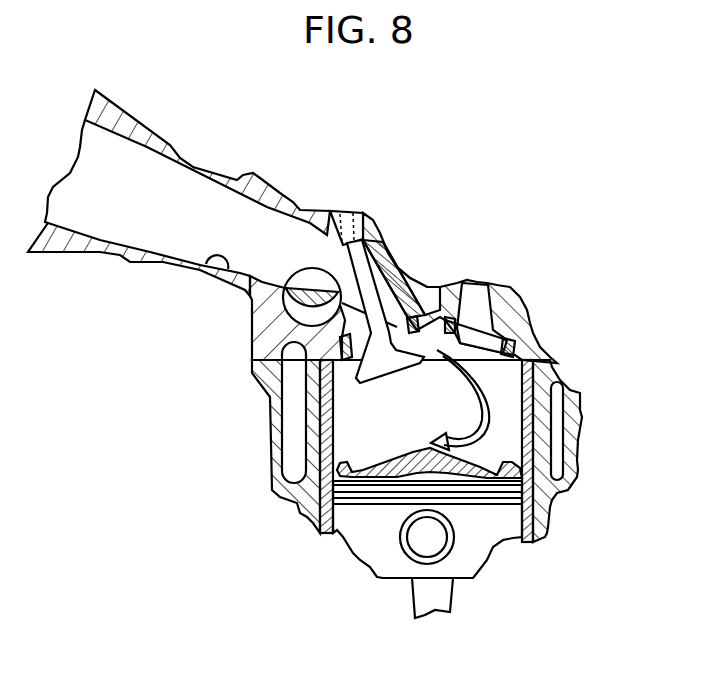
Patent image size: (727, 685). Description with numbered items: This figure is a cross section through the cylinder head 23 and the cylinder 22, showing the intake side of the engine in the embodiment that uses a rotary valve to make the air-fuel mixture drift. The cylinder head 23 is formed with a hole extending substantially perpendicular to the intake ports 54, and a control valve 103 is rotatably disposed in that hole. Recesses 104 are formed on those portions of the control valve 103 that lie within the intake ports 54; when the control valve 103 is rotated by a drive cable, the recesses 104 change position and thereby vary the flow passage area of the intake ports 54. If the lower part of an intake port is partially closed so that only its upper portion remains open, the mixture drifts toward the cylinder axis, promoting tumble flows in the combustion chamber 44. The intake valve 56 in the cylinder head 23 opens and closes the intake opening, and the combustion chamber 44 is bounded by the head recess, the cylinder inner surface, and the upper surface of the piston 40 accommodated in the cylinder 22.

The cylinder 22 is at (583, 455).
The cylinder head 23 is at (150, 262).
The piston 40 is at (473, 547).
The combustion chamber 44 is at (367, 425).
The intake ports 54 is at (197, 265).
The intake valves 56 is at (405, 275).
The control valve 103 is at (179, 218).
The recesses 104 is at (247, 302).